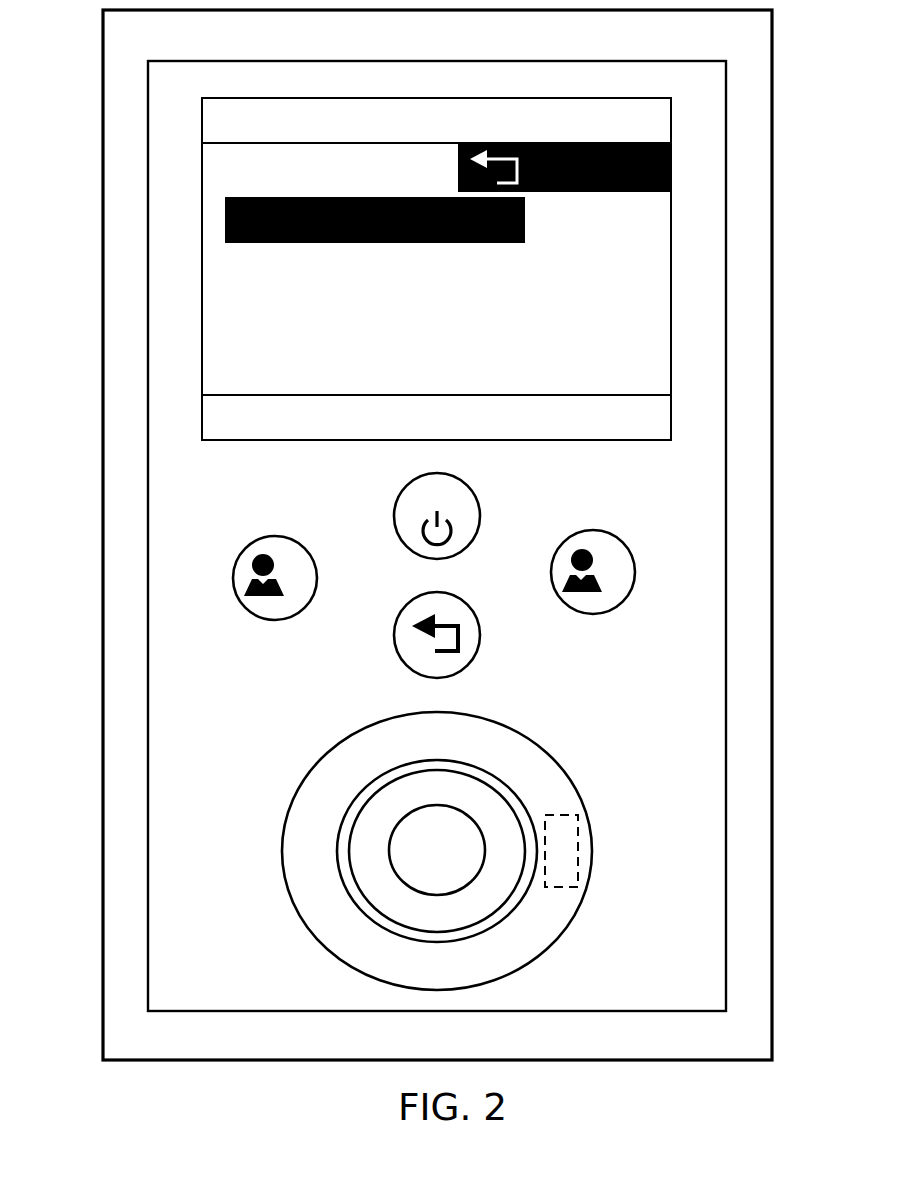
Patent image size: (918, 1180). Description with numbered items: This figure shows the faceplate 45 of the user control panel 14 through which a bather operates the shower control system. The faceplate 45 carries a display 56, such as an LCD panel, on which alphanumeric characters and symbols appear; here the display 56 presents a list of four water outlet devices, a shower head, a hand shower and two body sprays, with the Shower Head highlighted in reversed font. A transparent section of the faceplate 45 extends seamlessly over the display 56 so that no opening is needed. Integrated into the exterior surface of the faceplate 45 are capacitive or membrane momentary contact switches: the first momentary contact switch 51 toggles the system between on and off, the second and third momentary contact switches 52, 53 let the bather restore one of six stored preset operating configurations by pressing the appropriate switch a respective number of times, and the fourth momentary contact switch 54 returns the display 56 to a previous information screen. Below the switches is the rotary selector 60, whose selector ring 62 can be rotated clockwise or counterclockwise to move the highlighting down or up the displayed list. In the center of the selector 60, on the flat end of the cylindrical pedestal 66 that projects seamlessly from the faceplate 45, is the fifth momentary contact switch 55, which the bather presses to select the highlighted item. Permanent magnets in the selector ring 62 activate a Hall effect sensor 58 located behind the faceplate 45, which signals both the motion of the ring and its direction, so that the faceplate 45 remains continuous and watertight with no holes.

The user control panel 14 is at (100, 447).
The faceplate 45 is at (172, 692).
The display 56 is at (345, 441).
The first momentary contact switch 51 is at (472, 514).
The second momentary contact switch 52 is at (281, 545).
The third momentary contact switch 53 is at (593, 540).
The fourth momentary contact switch 54 is at (407, 645).
The rotary selector 60 is at (567, 758).
The selector ring 62 is at (330, 790).
The pedestal 66 is at (402, 895).
The fifth momentary contact switch 55 is at (403, 870).
The Hall effect sensor 58 is at (577, 833).